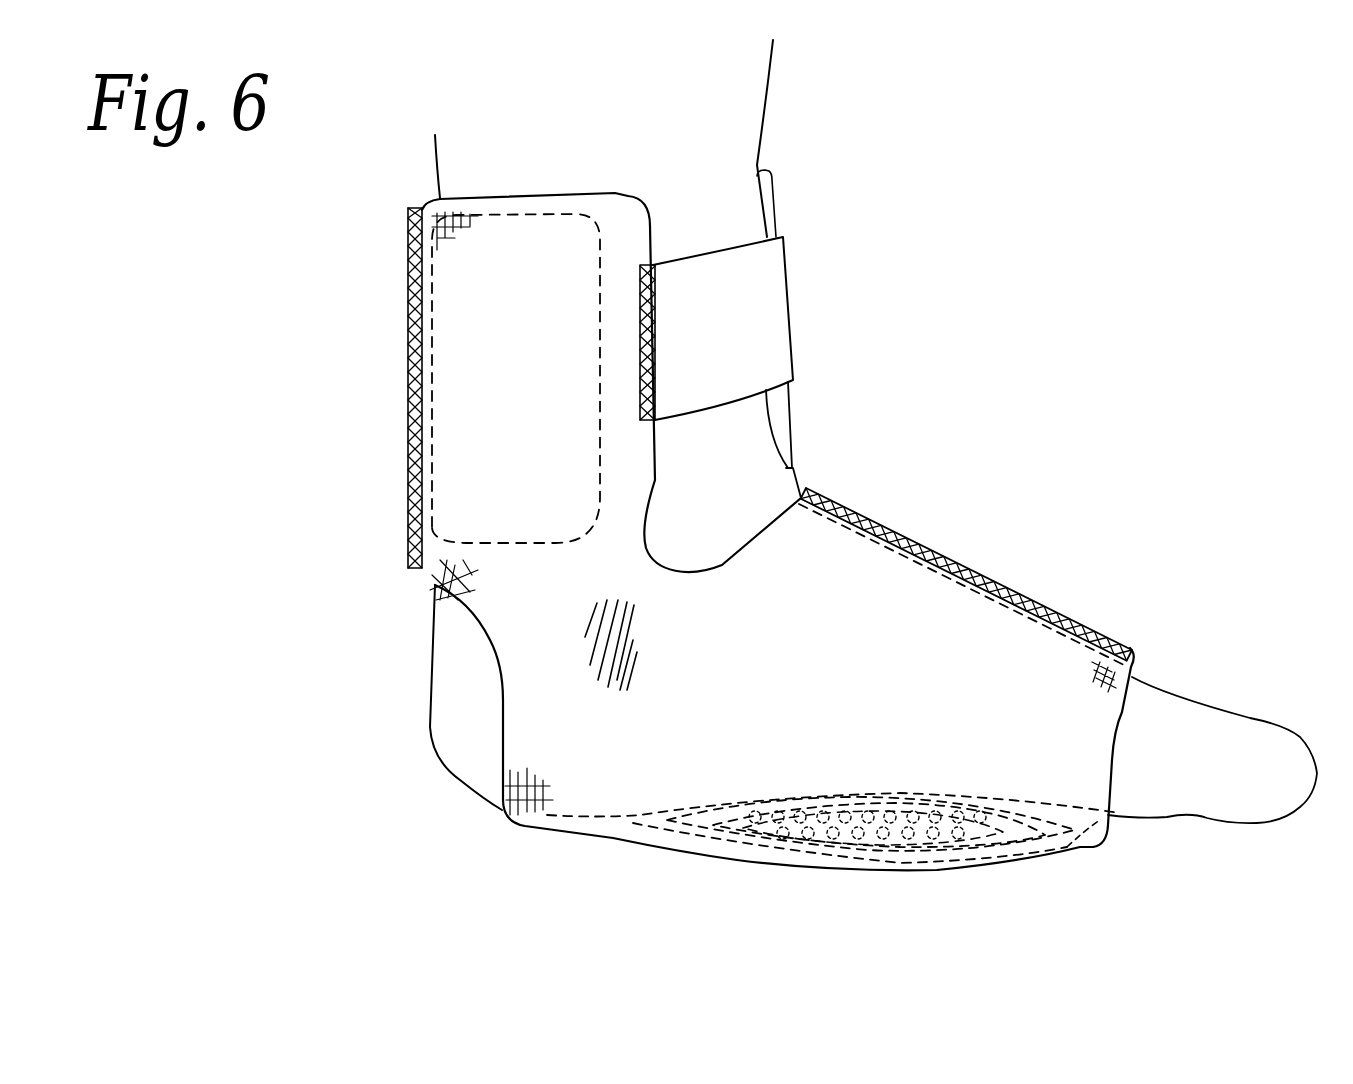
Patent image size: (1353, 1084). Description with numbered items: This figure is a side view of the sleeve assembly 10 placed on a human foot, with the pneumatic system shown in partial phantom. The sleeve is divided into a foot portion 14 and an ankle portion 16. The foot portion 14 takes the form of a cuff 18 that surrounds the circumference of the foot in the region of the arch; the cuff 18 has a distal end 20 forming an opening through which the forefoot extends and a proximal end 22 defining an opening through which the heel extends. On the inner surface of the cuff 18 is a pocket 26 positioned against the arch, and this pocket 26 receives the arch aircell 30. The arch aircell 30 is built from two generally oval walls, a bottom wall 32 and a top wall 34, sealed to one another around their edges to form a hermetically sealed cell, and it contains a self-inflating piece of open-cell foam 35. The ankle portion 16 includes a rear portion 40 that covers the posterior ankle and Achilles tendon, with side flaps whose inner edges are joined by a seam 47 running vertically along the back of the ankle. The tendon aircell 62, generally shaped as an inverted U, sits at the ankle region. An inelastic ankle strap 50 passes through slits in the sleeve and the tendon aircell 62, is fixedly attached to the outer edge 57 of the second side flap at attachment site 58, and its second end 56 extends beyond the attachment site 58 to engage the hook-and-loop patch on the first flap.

The sleeve assembly 10 is at (1140, 487).
The foot portion 14 is at (484, 872).
The ankle portion 16 is at (340, 190).
The cuff 18 is at (1023, 647).
The distal end 20 is at (1118, 720).
The proximal end 22 is at (503, 757).
The pocket 26 is at (1087, 850).
The arch aircell 30 is at (698, 823).
The bottom wall 32 is at (935, 860).
The top wall 34 is at (963, 808).
The open-cell foam 35 is at (840, 820).
The rear portion 40 is at (460, 578).
The seam 47 is at (404, 356).
The ankle strap 50 is at (818, 226).
The second end 56 is at (767, 364).
The outer edge 57 is at (650, 230).
The attachment site 58 is at (655, 340).
The tendon aircell 62 is at (570, 210).